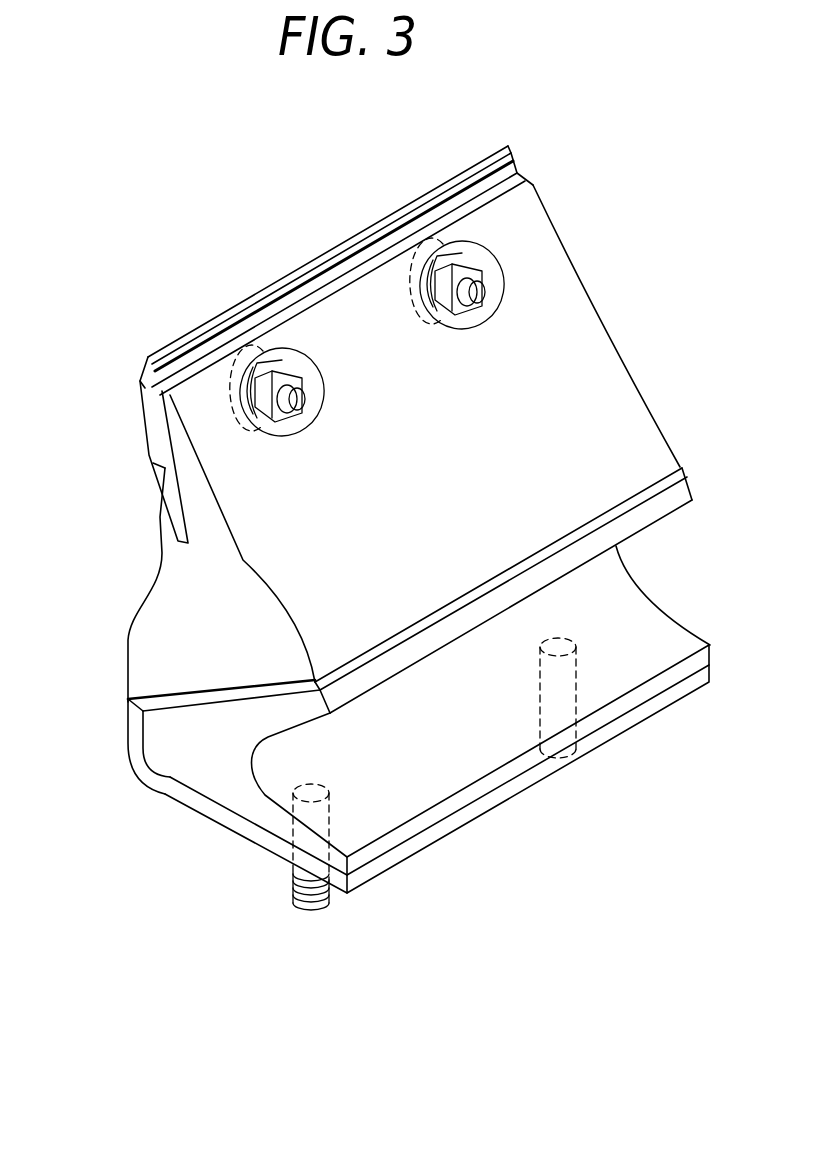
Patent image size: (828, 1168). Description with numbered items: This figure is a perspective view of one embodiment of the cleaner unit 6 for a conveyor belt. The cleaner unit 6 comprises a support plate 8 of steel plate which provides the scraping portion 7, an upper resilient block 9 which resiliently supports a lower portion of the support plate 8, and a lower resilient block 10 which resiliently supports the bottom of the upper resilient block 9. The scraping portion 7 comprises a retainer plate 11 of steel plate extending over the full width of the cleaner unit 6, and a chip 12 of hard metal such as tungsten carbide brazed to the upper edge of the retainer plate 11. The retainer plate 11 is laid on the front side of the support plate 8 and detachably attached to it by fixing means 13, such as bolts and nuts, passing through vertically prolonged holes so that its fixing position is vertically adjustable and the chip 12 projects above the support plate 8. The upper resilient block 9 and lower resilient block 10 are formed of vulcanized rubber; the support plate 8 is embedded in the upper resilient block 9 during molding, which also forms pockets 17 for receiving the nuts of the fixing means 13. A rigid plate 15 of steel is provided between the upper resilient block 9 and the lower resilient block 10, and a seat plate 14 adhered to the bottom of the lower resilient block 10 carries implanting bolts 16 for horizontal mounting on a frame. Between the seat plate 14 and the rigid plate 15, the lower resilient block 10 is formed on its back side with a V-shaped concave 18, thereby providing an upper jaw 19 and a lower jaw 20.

The cleaner unit 6 is at (597, 247).
The scraping portion 7 is at (50, 285).
The support plate 8 is at (178, 512).
The upper resilient block 9 is at (200, 618).
The lower resilient block 10 is at (208, 753).
The retainer plate 11 is at (143, 417).
The chip 12 is at (153, 377).
The fixing means 13 is at (300, 400).
The seat plate 14 is at (233, 833).
The rigid plate 15 is at (195, 698).
The implanting bolts 16 is at (313, 906).
The pockets 17 is at (292, 428).
The V-shaped concave 18 is at (466, 703).
The upper jaw 19 is at (377, 690).
The lower jaw 20 is at (430, 796).